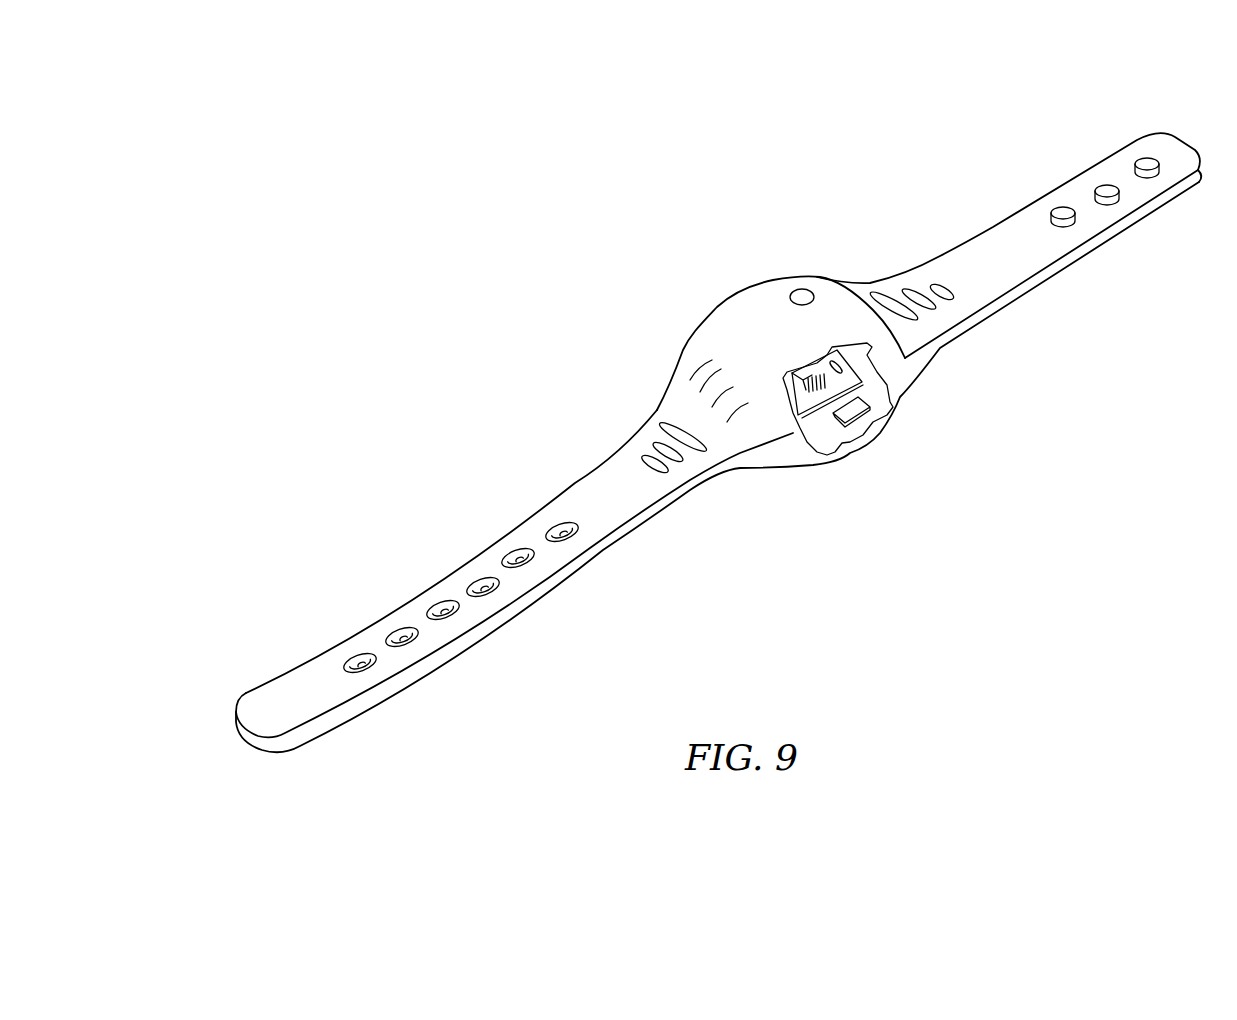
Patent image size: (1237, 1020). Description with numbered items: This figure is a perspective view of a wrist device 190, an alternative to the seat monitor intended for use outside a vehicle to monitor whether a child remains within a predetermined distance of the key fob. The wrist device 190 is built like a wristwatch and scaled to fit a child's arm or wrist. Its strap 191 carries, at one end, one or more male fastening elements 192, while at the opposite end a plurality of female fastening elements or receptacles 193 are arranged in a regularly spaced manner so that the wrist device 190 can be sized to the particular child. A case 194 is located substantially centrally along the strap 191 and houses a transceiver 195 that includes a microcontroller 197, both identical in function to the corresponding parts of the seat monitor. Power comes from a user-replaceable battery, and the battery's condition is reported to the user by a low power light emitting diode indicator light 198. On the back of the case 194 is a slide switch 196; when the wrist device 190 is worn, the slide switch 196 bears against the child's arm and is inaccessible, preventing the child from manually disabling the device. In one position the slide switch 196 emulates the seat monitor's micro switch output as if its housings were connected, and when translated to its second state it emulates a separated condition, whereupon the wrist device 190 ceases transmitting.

The wrist device 190 is at (560, 194).
The strap 191 is at (540, 588).
The male fastening elements 192 is at (1103, 188).
The female fastening elements or receptacles 193 is at (480, 583).
The case 194 is at (693, 333).
The transceiver 195 is at (833, 358).
The slide switch 196 is at (867, 412).
The microcontroller 197 is at (833, 358).
The low power light emitting diode indicator light 198 is at (803, 295).